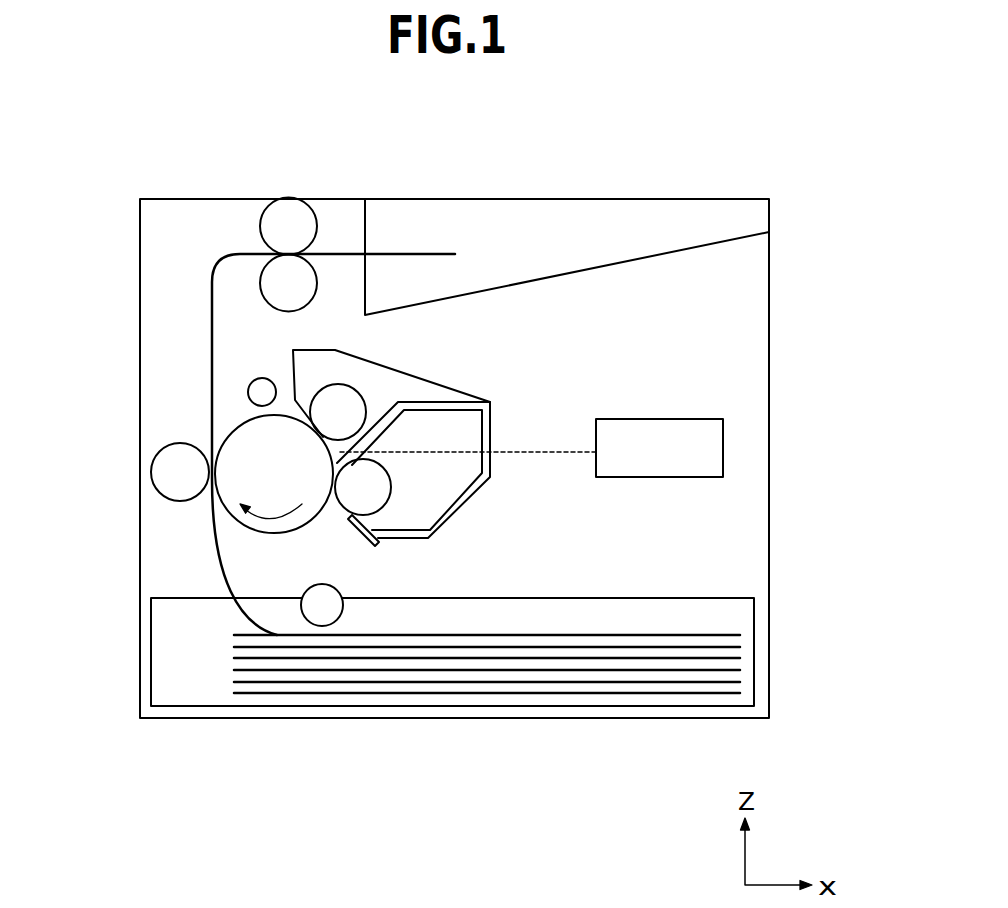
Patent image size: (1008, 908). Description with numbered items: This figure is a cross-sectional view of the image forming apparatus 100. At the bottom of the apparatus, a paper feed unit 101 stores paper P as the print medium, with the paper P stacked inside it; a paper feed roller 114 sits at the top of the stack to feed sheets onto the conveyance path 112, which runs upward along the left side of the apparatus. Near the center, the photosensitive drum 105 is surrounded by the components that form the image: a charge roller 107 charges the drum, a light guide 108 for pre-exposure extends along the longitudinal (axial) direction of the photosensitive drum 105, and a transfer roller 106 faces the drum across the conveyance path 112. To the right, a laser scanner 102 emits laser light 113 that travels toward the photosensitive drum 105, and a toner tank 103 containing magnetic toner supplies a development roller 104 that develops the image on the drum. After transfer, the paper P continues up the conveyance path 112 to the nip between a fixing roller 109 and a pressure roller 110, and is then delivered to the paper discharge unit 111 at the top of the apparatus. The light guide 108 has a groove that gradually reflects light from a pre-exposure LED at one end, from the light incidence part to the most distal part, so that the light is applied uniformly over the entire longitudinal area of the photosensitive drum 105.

The image forming apparatus 100 is at (758, 150).
The paper feed unit 101 is at (755, 657).
The laser scanner 102 is at (724, 445).
The toner tank 103 is at (432, 498).
The development roller 104 is at (375, 500).
The photosensitive drum 105 is at (237, 488).
The transfer roller 106 is at (165, 473).
The charge roller 107 is at (348, 402).
The light guide 108 is at (252, 393).
The fixing roller 109 is at (277, 283).
The pressure roller 110 is at (289, 212).
The paper discharge unit 111 is at (562, 273).
The conveyance path 112 is at (212, 566).
The laser light 113 is at (545, 452).
The paper feed roller 114 is at (322, 597).
The paper P is at (505, 684).